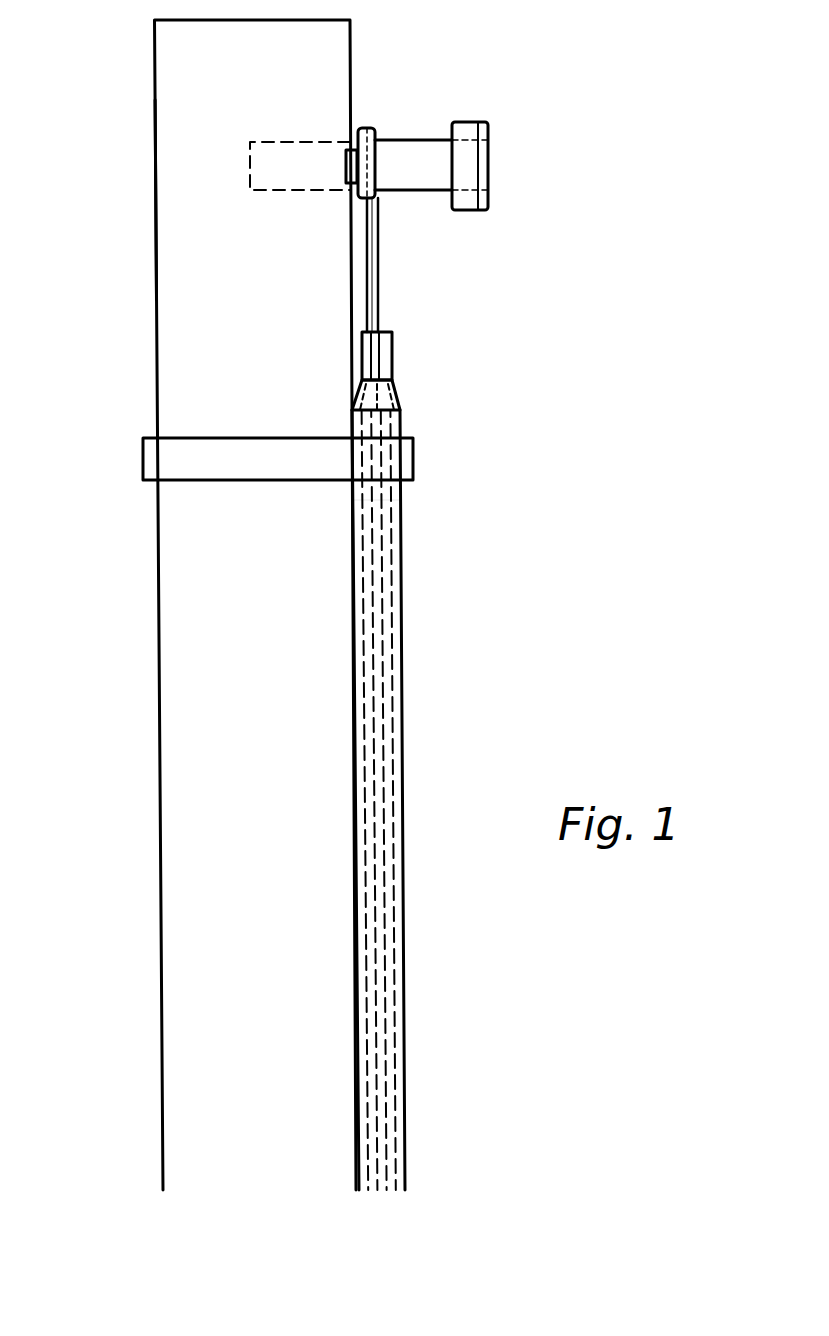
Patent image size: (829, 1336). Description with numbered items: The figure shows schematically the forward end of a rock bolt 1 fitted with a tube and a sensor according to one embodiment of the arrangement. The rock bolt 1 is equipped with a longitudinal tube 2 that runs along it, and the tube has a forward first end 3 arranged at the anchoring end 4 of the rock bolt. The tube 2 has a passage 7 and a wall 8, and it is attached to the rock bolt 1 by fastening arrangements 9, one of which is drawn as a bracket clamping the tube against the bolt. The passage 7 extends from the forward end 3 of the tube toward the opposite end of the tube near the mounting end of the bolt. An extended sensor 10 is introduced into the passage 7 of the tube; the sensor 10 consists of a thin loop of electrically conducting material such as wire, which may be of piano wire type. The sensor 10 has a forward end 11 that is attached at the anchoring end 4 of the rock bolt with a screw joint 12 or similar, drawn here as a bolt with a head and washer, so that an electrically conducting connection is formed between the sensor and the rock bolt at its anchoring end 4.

The rock bolt 1 is at (188, 670).
The longitudinal tube 2 is at (438, 800).
The forward first end 3 is at (437, 556).
The anchoring end 4 is at (138, 228).
The passage 7 is at (385, 318).
The wall 8 is at (396, 615).
The fastening arrangements 9 is at (177, 457).
The extended sensor 10 is at (378, 250).
The forward end 11 is at (383, 110).
The screw joint 12 is at (420, 158).